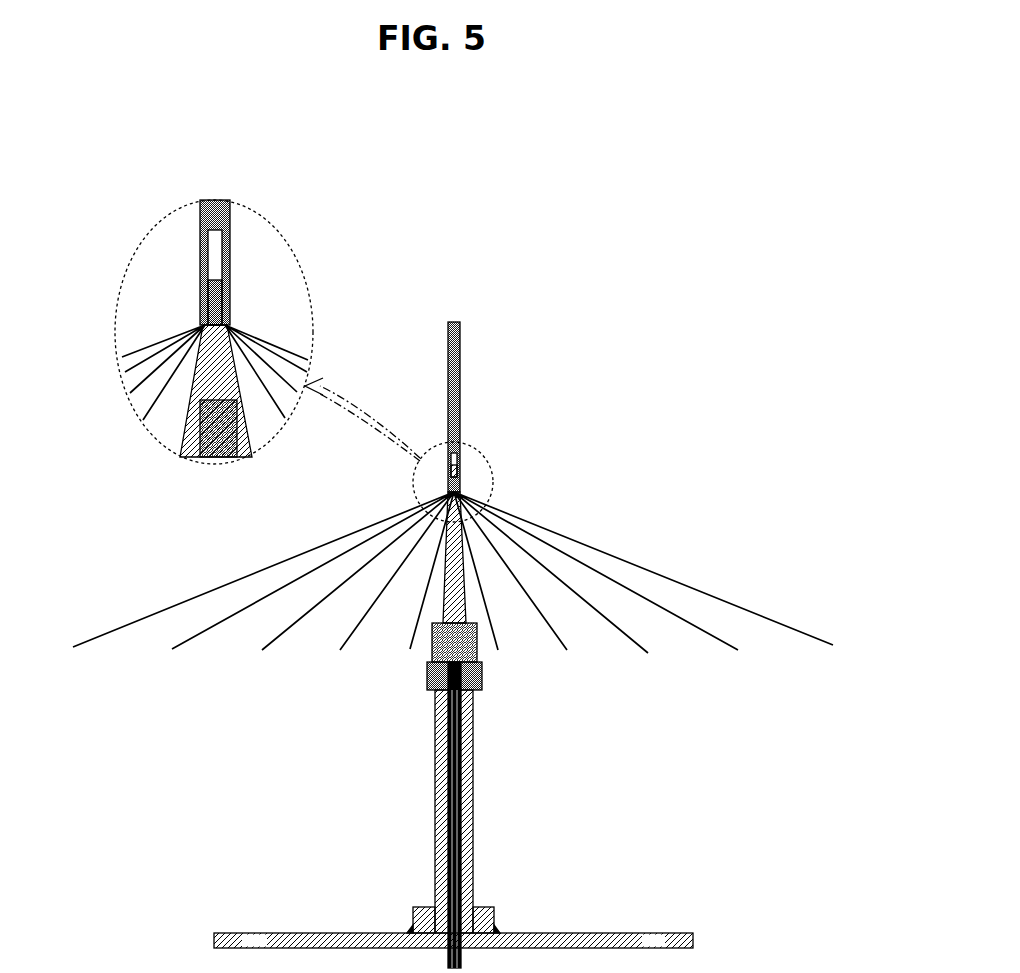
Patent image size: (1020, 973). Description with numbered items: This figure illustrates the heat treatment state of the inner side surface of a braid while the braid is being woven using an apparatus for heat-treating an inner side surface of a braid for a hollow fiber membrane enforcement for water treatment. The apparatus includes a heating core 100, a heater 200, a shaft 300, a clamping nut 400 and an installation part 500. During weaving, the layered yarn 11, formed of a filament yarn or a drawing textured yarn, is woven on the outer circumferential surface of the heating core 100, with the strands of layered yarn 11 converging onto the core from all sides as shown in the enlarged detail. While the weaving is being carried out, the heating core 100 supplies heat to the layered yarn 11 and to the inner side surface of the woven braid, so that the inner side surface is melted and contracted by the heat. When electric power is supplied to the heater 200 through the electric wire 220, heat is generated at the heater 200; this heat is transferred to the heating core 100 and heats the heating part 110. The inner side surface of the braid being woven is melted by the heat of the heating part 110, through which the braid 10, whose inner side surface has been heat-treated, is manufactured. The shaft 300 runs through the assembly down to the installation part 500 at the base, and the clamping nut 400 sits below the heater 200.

The braid 10 is at (218, 200).
The layered yarn 11 is at (267, 337).
The heating core 100 is at (183, 437).
The heating part 110 is at (200, 293).
The heater 200 is at (209, 460).
The electric wire 220 is at (437, 790).
The shaft 300 is at (473, 842).
The clamping nut 400 is at (482, 680).
The installation part 500 is at (318, 943).